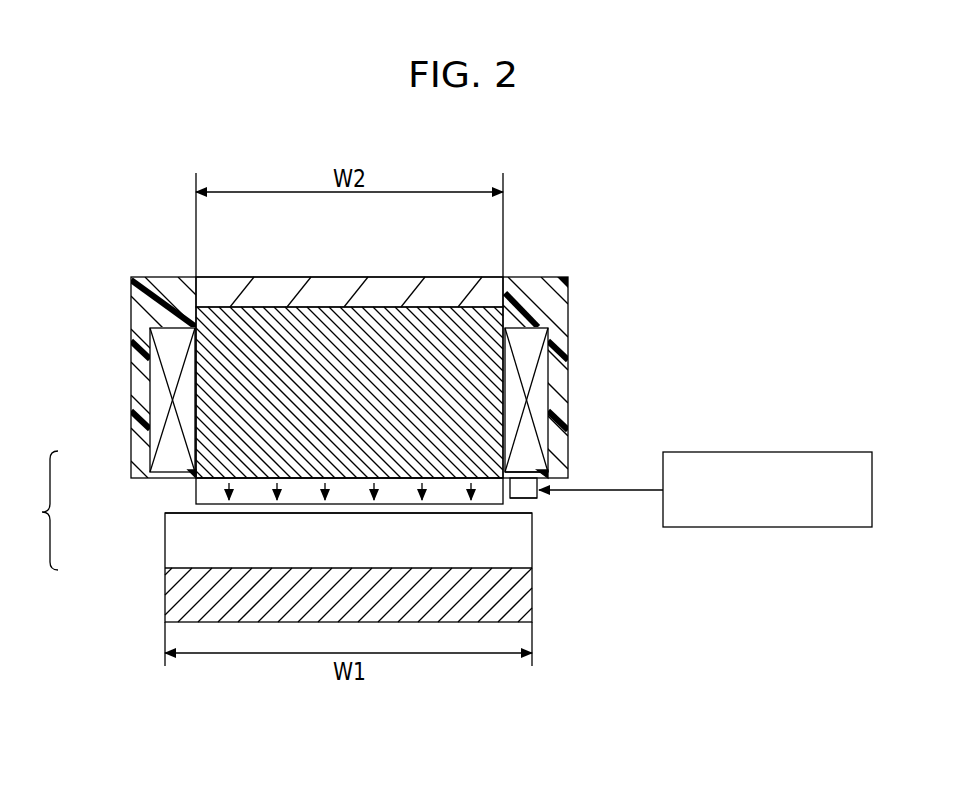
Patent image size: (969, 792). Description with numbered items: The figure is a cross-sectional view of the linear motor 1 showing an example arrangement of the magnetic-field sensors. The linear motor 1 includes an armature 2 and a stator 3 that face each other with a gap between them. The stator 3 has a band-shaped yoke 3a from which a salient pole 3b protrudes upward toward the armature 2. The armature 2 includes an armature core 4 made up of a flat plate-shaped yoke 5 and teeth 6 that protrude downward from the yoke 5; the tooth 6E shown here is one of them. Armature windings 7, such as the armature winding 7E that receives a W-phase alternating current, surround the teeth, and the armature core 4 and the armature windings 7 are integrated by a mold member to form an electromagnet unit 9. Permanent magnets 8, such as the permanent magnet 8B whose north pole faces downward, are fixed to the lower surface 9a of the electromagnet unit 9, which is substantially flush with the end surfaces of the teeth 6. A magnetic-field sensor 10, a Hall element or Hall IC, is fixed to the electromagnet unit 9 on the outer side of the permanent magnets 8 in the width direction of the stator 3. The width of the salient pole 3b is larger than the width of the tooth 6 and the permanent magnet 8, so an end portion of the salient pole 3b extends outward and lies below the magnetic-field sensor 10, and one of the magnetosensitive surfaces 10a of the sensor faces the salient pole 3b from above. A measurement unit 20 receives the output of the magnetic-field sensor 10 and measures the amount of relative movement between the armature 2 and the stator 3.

The linear motor 1 is at (36, 525).
The armature 2 is at (348, 382).
The stator 3 is at (317, 570).
The yoke 3a is at (515, 608).
The salient pole 3b is at (498, 560).
The armature core 4 is at (380, 370).
The yoke 5 is at (380, 290).
The tooth 6 is at (419, 380).
The tooth 6E is at (473, 325).
The armature winding 7 is at (573, 400).
The armature winding 7E is at (547, 372).
The permanent magnet 8 is at (349, 516).
The permanent magnet 8B is at (255, 493).
The electromagnet unit 9 is at (153, 290).
The lower surface 9a is at (140, 479).
The magnetic-field sensor 10 is at (538, 500).
The magnetosensitive surface 10a is at (523, 476).
The measurement unit 20 is at (812, 452).